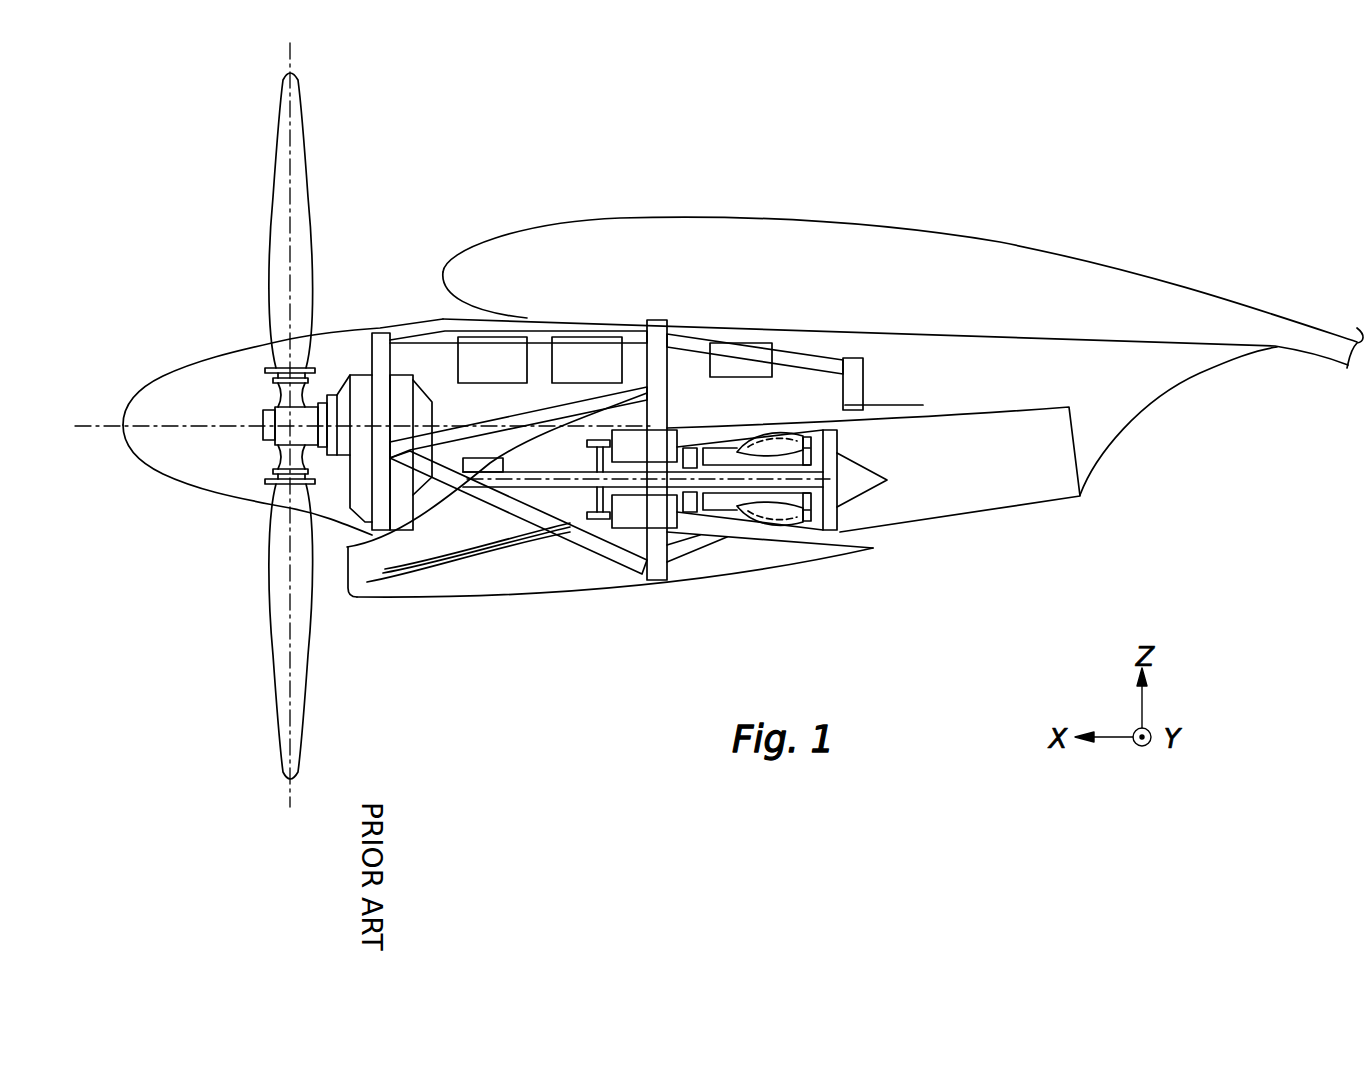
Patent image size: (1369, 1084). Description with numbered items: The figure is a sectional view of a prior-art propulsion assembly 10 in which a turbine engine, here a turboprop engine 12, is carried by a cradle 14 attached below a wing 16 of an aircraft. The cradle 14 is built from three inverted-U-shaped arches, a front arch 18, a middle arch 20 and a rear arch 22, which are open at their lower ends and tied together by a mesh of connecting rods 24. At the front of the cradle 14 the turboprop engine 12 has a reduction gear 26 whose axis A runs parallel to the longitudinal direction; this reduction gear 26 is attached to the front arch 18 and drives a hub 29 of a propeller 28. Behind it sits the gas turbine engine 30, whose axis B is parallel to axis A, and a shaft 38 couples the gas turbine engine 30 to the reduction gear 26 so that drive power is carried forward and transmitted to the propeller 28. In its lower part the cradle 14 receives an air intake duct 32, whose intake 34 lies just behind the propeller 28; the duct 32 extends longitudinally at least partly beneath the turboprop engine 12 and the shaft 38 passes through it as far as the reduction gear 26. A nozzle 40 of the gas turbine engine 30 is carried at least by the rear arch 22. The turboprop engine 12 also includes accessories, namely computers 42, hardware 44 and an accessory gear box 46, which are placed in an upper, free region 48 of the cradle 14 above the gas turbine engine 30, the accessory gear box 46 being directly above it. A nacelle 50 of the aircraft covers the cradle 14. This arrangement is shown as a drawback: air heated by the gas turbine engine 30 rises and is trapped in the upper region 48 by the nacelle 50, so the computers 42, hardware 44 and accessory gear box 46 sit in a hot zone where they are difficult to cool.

The propulsion assembly 10 is at (992, 173).
The turboprop engine 12 is at (635, 577).
The cradle 14 is at (818, 352).
The wing 16 is at (1028, 268).
The front arch 18 is at (383, 357).
The middle arch 20 is at (657, 320).
The rear arch 22 is at (863, 382).
The connecting rods 24 is at (537, 418).
The reduction gear 26 is at (353, 390).
The propeller 28 is at (282, 602).
The hub 29 is at (268, 419).
The gas turbine engine 30 is at (752, 535).
The air intake duct 32 is at (418, 547).
The intake 34 is at (347, 568).
The shaft 38 is at (560, 480).
The nozzle 40 is at (977, 487).
The computers 42 is at (540, 360).
The hardware 44 is at (741, 360).
The accessory gear box 46 is at (660, 348).
The upper free region 48 is at (418, 452).
The nacelle 50 is at (427, 318).
The axis of the reduction gear A is at (92, 425).
The axis of the gas turbine engine B is at (848, 490).